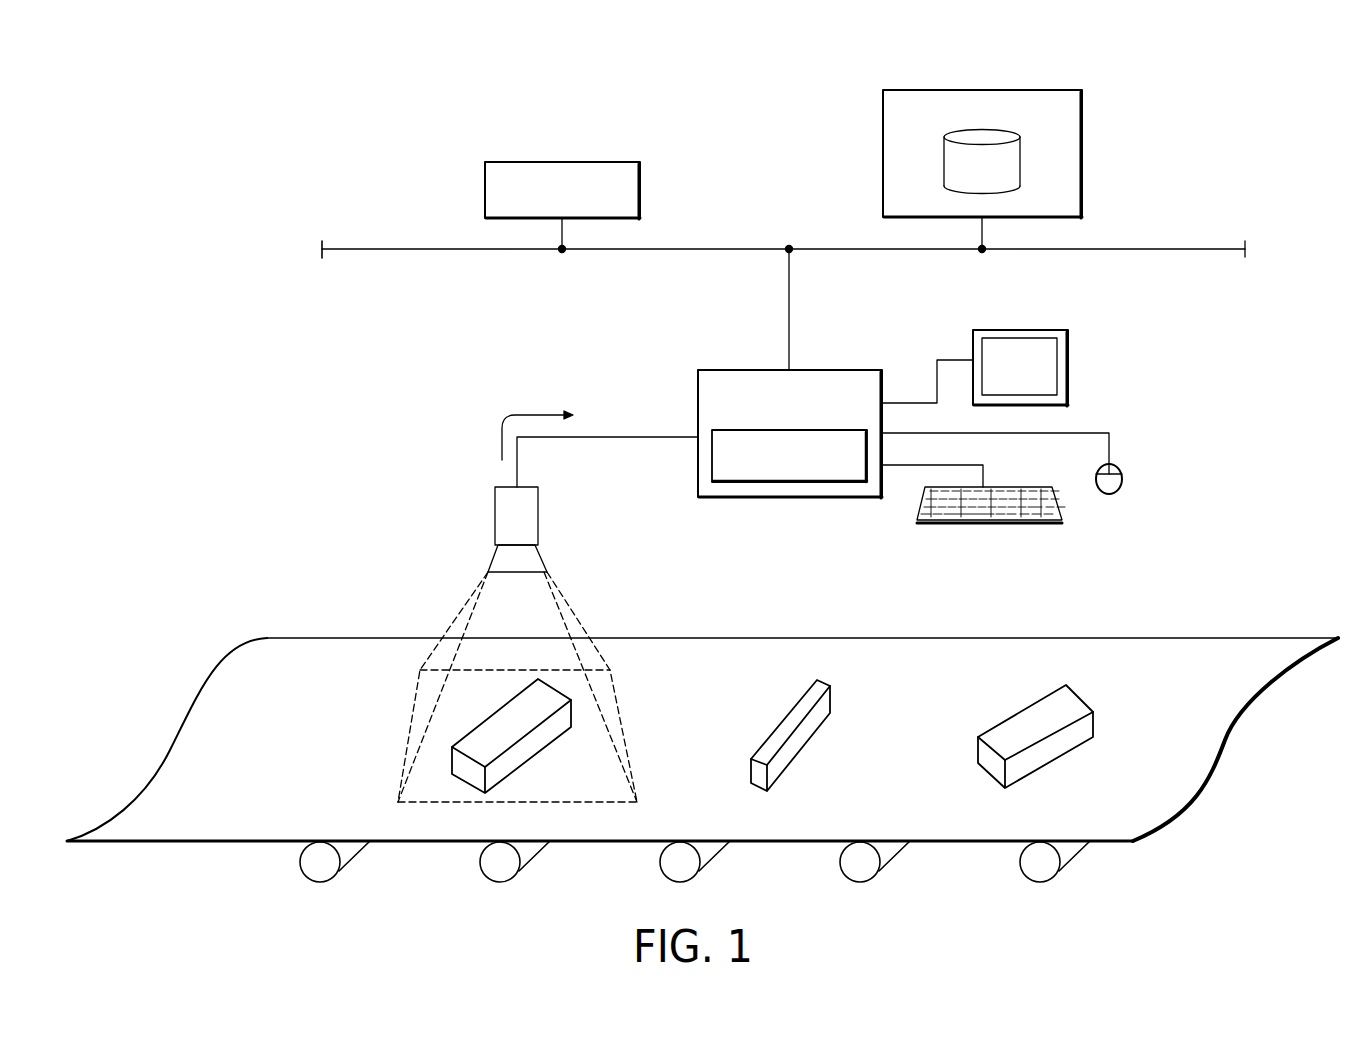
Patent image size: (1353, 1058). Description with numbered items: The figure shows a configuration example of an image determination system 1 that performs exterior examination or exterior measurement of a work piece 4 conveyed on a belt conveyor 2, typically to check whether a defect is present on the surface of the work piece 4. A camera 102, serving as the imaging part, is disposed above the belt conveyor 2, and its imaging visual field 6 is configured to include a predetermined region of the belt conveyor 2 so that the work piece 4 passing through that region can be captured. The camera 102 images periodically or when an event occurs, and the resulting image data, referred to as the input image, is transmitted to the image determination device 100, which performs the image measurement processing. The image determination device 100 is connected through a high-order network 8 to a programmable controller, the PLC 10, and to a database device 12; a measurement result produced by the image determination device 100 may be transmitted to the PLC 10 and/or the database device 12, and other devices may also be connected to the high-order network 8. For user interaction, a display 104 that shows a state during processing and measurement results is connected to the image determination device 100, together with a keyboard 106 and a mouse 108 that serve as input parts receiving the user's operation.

The image determination system 1 is at (1280, 72).
The belt conveyor 2 is at (1140, 660).
The work piece 4 is at (518, 722).
The imaging visual field 6 is at (627, 748).
The high-order network 8 is at (1152, 248).
The programmable controller (PLC) 10 is at (577, 162).
The database device 12 is at (1020, 90).
The image determination device 100 is at (826, 368).
The camera 102 is at (538, 518).
The display 104 is at (1030, 330).
The keyboard 106 is at (990, 525).
The mouse 108 is at (1122, 480).